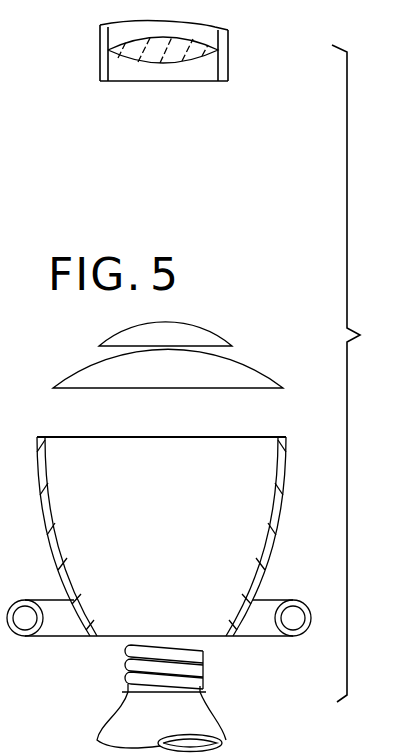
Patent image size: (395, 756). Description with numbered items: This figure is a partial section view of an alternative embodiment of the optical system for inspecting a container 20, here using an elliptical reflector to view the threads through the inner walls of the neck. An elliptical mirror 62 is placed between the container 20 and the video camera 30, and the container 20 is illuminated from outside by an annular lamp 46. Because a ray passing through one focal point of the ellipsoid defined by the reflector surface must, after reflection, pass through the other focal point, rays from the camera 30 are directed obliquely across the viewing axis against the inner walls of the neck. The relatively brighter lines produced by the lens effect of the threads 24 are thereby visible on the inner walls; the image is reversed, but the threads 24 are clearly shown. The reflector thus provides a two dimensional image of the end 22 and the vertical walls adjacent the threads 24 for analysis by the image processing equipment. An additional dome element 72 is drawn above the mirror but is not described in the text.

The video camera 30 is at (235, 52).
The dome reflector 72 is at (283, 388).
The elliptical mirror 62 is at (272, 519).
The annular lamp 46 is at (303, 600).
The end 22 is at (136, 648).
The threads 24 is at (205, 664).
The container 20 is at (218, 741).